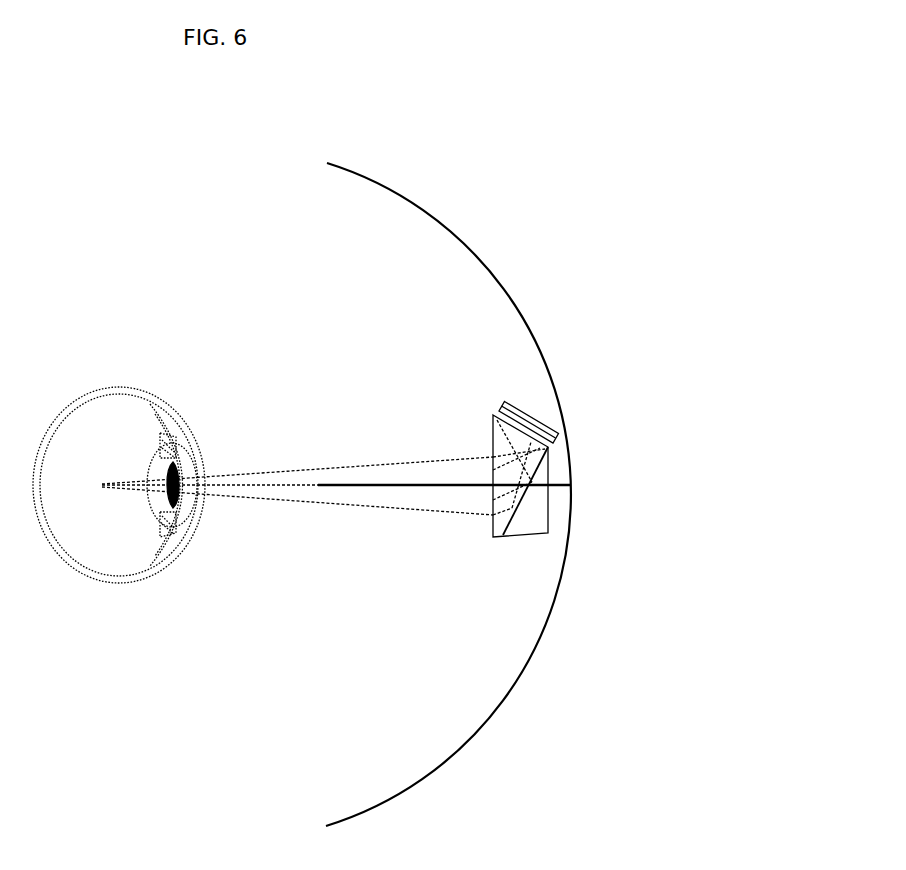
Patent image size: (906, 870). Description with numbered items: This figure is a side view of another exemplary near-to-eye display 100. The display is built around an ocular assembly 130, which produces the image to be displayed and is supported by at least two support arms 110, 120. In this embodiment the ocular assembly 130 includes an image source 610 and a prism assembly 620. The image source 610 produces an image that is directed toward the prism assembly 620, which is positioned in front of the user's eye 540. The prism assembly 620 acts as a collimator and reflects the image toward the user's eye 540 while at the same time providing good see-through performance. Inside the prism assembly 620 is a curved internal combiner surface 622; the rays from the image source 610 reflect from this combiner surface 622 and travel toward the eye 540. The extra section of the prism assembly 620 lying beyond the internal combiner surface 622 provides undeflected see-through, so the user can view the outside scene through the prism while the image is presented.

The near-to-eye (NTE) display 100 is at (574, 75).
The support arm 110 is at (487, 718).
The support arm 120 is at (400, 487).
The ocular assembly 130 is at (430, 387).
The user's eye 540 is at (117, 584).
The image source 610 is at (528, 400).
The prism assembly 620 is at (491, 527).
The curved internal combiner surface 622 is at (505, 538).